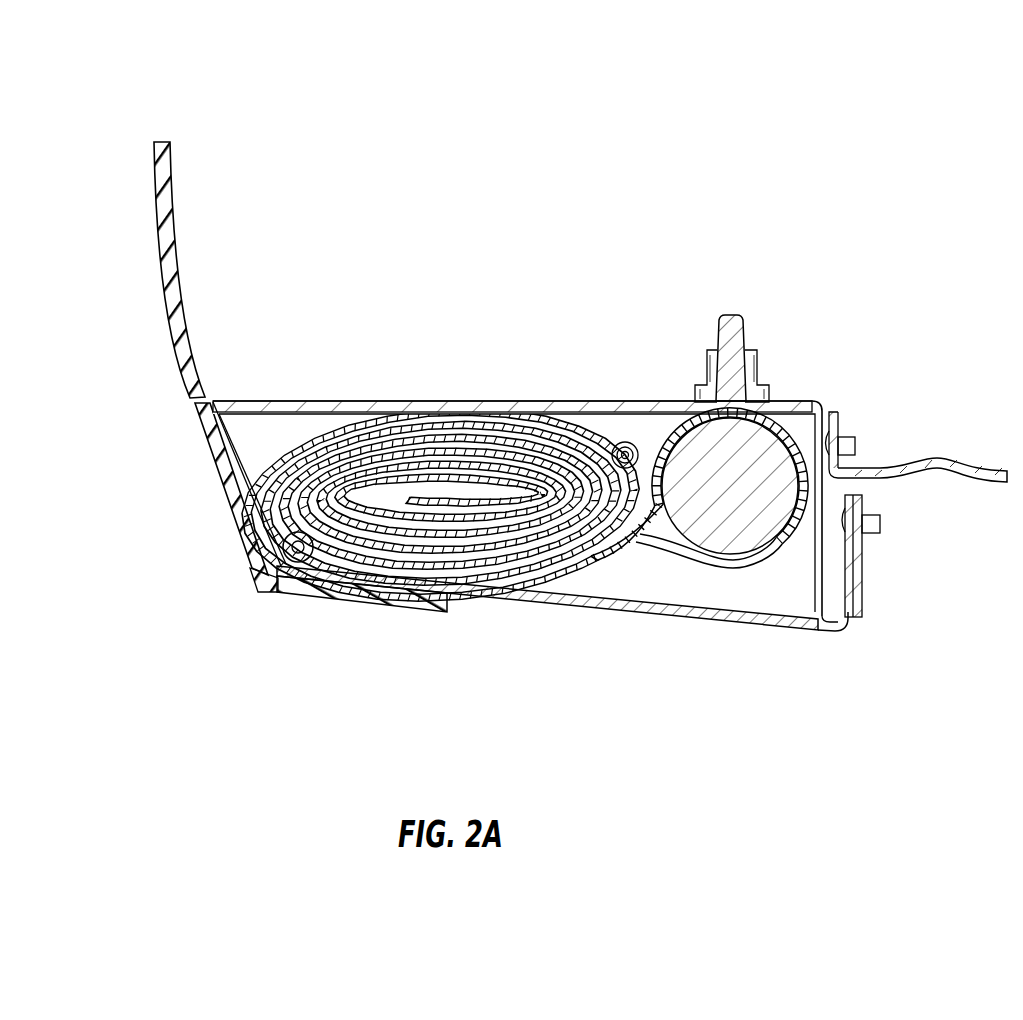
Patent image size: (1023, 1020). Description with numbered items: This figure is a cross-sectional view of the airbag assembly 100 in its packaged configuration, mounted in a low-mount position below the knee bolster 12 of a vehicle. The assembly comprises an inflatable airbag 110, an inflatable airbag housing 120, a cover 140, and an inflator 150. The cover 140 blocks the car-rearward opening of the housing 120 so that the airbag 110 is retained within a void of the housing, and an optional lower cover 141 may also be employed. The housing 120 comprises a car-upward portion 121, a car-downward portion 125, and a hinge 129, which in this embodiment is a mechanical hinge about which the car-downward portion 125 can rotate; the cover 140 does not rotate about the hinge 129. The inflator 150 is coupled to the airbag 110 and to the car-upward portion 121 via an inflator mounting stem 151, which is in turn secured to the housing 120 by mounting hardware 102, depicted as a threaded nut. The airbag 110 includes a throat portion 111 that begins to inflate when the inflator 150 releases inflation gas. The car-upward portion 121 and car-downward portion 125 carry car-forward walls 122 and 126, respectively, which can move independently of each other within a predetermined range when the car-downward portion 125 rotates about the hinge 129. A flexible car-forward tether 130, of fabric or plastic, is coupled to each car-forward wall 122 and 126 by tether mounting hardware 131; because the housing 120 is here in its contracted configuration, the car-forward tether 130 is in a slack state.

The airbag assembly 100 is at (718, 106).
The knee bolster 12 is at (158, 258).
The cover 140 is at (232, 495).
The inflatable airbag housing 120 is at (620, 405).
The car-upward portion 121 is at (292, 408).
The inflatable airbag 110 is at (521, 416).
The throat portion 111 is at (655, 470).
The inflator 150 is at (750, 455).
The inflator mounting stem 151 is at (733, 345).
The mounting hardware 102 is at (753, 368).
The car-forward wall 122 is at (833, 420).
The tether mounting hardware 131 is at (848, 445).
The car-forward tether 130 is at (953, 460).
The car-downward portion 125 is at (632, 598).
The car-forward wall 126 is at (852, 612).
The lower cover 141 is at (332, 600).
The hinge 129 is at (293, 543).